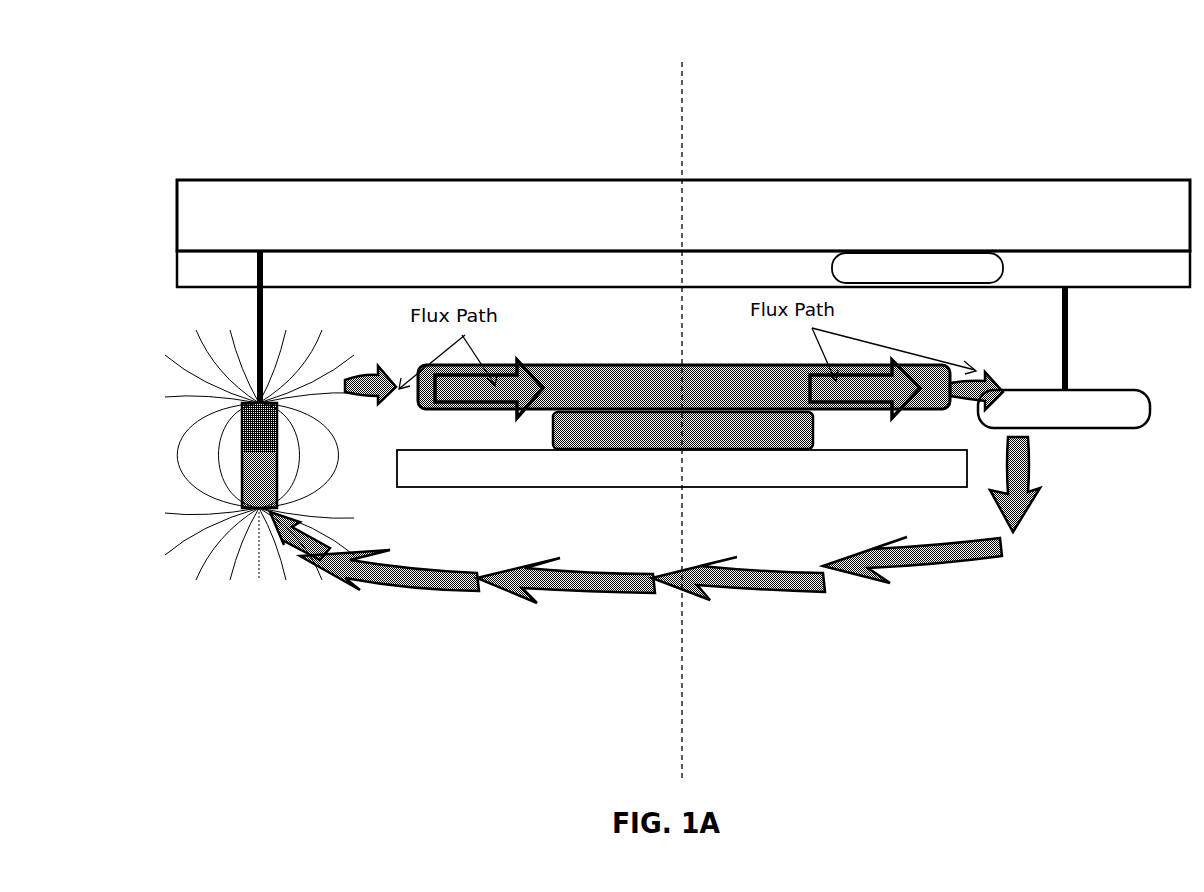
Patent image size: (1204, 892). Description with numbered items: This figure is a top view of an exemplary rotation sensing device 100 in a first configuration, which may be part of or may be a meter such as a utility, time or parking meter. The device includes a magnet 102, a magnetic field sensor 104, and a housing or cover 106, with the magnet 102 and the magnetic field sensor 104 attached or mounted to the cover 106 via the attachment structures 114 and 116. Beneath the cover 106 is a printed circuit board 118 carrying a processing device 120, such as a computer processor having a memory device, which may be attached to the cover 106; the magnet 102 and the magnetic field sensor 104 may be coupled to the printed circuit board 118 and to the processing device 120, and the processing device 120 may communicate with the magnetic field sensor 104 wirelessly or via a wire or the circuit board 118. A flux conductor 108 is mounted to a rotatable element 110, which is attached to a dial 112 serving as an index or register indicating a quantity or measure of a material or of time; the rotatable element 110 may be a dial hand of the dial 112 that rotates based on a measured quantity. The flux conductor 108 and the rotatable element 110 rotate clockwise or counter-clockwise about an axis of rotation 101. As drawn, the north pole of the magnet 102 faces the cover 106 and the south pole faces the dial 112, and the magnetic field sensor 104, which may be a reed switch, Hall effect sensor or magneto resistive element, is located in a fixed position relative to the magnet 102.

The rotation sensing device 100 is at (1084, 130).
The axis of rotation 101 is at (714, 420).
The magnet 102 is at (251, 455).
The magnetic field sensor 104 is at (1064, 409).
The cover 106 is at (683, 215).
The flux conductor 108 is at (684, 389).
The rotatable element 110 is at (683, 430).
The dial 112 is at (682, 468).
The attachment structure 114 is at (256, 297).
The attachment structure 116 is at (1070, 350).
The printed circuit board 118 is at (683, 269).
The processing device 120 is at (917, 268).